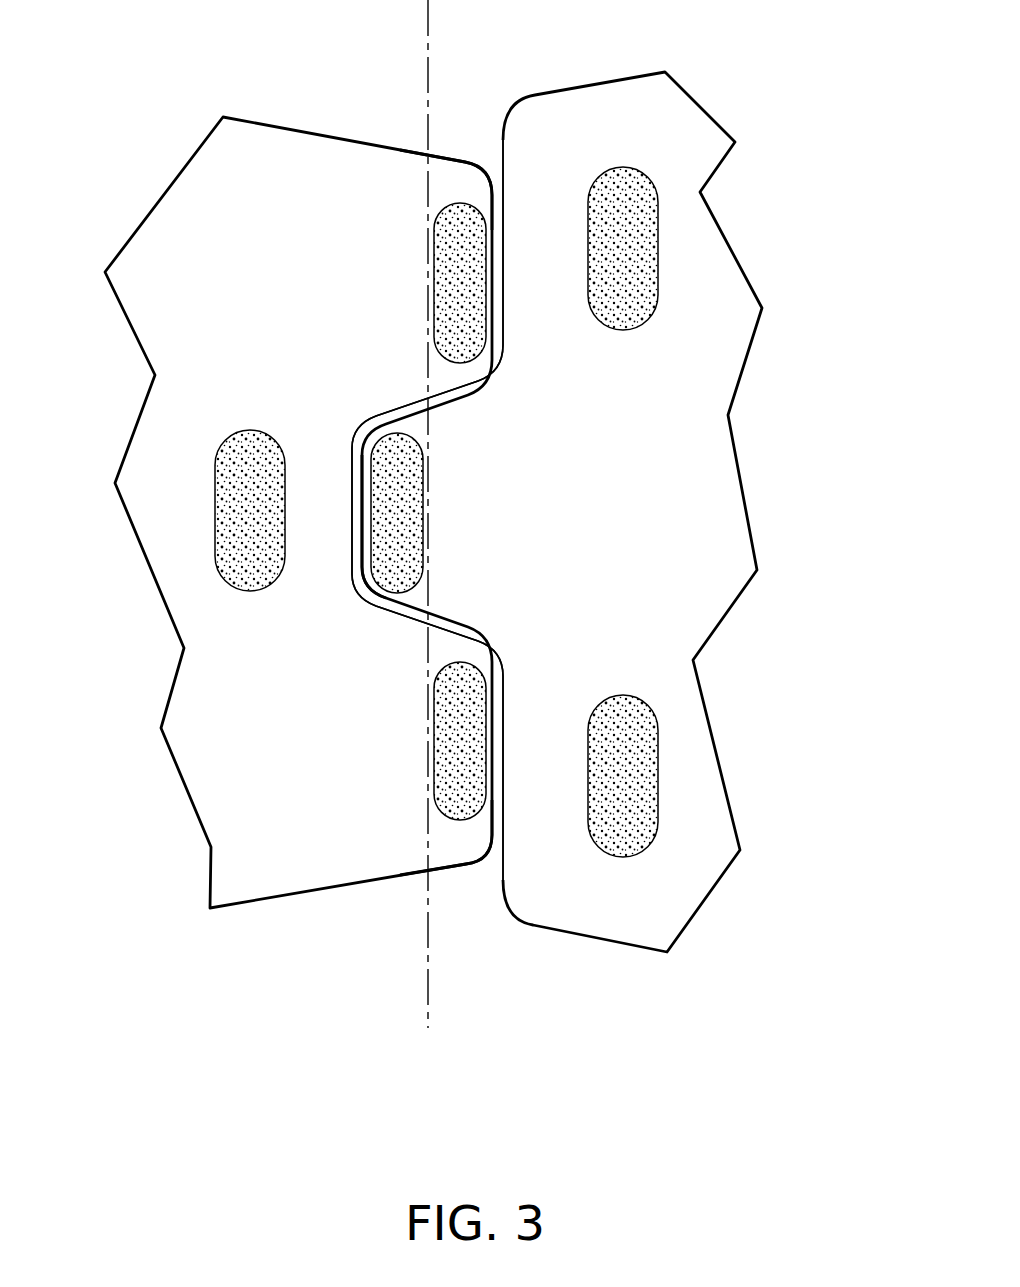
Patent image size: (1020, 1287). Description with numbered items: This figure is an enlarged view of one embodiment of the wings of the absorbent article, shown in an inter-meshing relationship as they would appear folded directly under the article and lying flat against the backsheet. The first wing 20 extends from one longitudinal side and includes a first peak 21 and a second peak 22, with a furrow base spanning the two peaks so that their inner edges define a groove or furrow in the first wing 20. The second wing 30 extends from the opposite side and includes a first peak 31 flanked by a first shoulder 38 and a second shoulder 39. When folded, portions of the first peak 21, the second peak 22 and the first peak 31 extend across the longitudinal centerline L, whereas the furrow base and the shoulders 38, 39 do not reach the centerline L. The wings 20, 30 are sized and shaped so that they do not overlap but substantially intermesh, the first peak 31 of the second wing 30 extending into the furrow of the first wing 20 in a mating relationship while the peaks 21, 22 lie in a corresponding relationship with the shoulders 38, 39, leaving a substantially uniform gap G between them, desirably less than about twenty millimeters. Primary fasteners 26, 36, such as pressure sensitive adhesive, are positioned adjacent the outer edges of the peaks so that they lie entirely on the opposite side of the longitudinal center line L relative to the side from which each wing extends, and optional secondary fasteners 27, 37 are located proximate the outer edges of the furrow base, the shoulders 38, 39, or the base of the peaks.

The first wing 20 is at (278, 352).
The first peak 21 is at (420, 192).
The second peak 22 is at (480, 850).
The primary fastener 26 is at (445, 273).
The secondary fastener 27 is at (237, 502).
The second wing 30 is at (653, 563).
The first peak 31 is at (512, 535).
The primary fastener 36 is at (418, 475).
The secondary fastener 37 is at (643, 303).
The first shoulder 38 is at (562, 254).
The second shoulder 39 is at (562, 795).
The gap G is at (372, 595).
The longitudinal centerline L is at (429, 532).